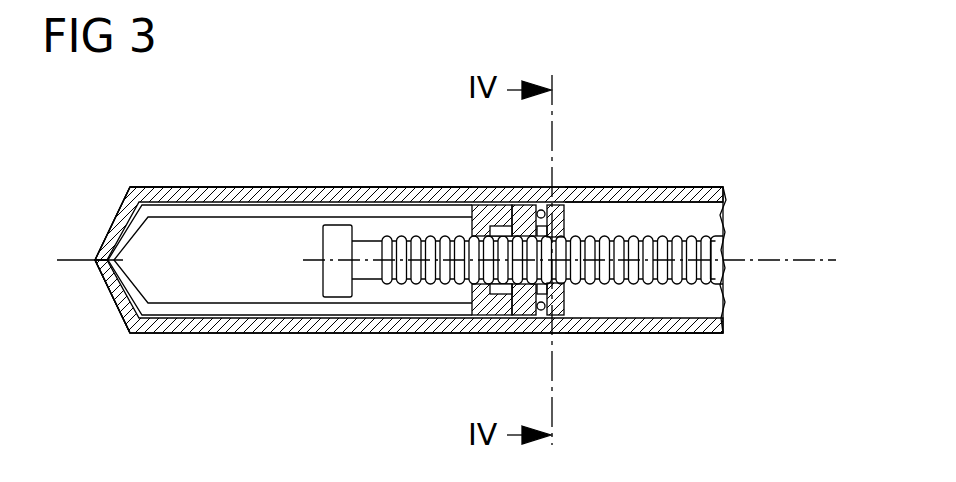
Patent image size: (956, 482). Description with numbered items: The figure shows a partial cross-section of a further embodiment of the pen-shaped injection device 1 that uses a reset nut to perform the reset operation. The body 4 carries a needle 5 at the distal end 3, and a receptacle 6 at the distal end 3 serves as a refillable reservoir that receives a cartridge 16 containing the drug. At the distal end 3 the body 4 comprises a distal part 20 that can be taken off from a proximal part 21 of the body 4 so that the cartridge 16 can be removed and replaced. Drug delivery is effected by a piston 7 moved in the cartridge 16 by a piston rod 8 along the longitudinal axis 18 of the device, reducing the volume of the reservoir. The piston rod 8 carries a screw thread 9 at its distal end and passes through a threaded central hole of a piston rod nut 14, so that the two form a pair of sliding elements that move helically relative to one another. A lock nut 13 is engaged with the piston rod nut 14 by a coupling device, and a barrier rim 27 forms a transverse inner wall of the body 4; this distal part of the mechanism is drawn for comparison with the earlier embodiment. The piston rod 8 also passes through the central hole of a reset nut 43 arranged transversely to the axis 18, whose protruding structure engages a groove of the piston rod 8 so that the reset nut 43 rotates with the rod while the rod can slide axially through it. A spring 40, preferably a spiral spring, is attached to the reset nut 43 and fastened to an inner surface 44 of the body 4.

The injection device 1 is at (98, 167).
The distal end 3 is at (89, 346).
The body 4 is at (702, 334).
The needle 5 is at (75, 260).
The receptacle 6 is at (263, 310).
The piston 7 is at (340, 283).
The piston rod 8 is at (713, 272).
The screw thread 9 is at (672, 236).
The lock nut 13 is at (482, 308).
The piston rod nut 14 is at (530, 205).
The cartridge 16 is at (182, 303).
The axis 18 is at (817, 258).
The distal part 20 is at (301, 197).
The proximal part 21 is at (702, 188).
The barrier rim 27 is at (565, 205).
The spring 40 is at (553, 318).
The reset nut 43 is at (548, 222).
The inner surface 44 is at (705, 212).